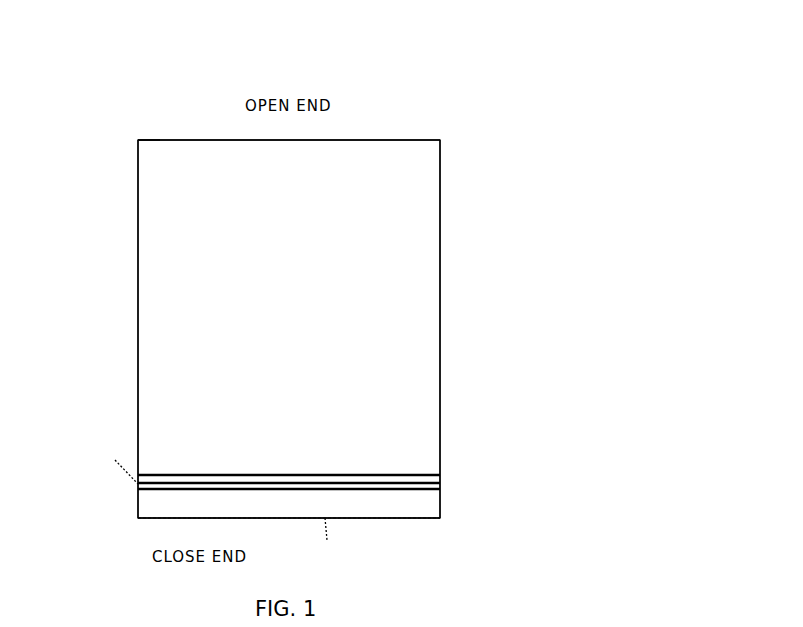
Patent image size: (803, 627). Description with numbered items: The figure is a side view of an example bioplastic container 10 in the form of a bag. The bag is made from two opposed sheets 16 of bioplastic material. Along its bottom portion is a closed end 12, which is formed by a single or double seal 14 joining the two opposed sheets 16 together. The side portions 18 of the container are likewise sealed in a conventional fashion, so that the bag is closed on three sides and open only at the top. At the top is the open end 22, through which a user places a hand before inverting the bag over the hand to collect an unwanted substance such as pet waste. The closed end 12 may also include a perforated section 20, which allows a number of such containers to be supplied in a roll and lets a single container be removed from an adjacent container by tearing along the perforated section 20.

The bioplastic container 10 is at (418, 118).
The closed end 12 is at (183, 493).
The single or double seal 14 is at (413, 474).
The opposed sheets 16 is at (425, 328).
The side portions 18 is at (138, 280).
The perforated section 20 is at (283, 520).
The open end 22 is at (167, 140).